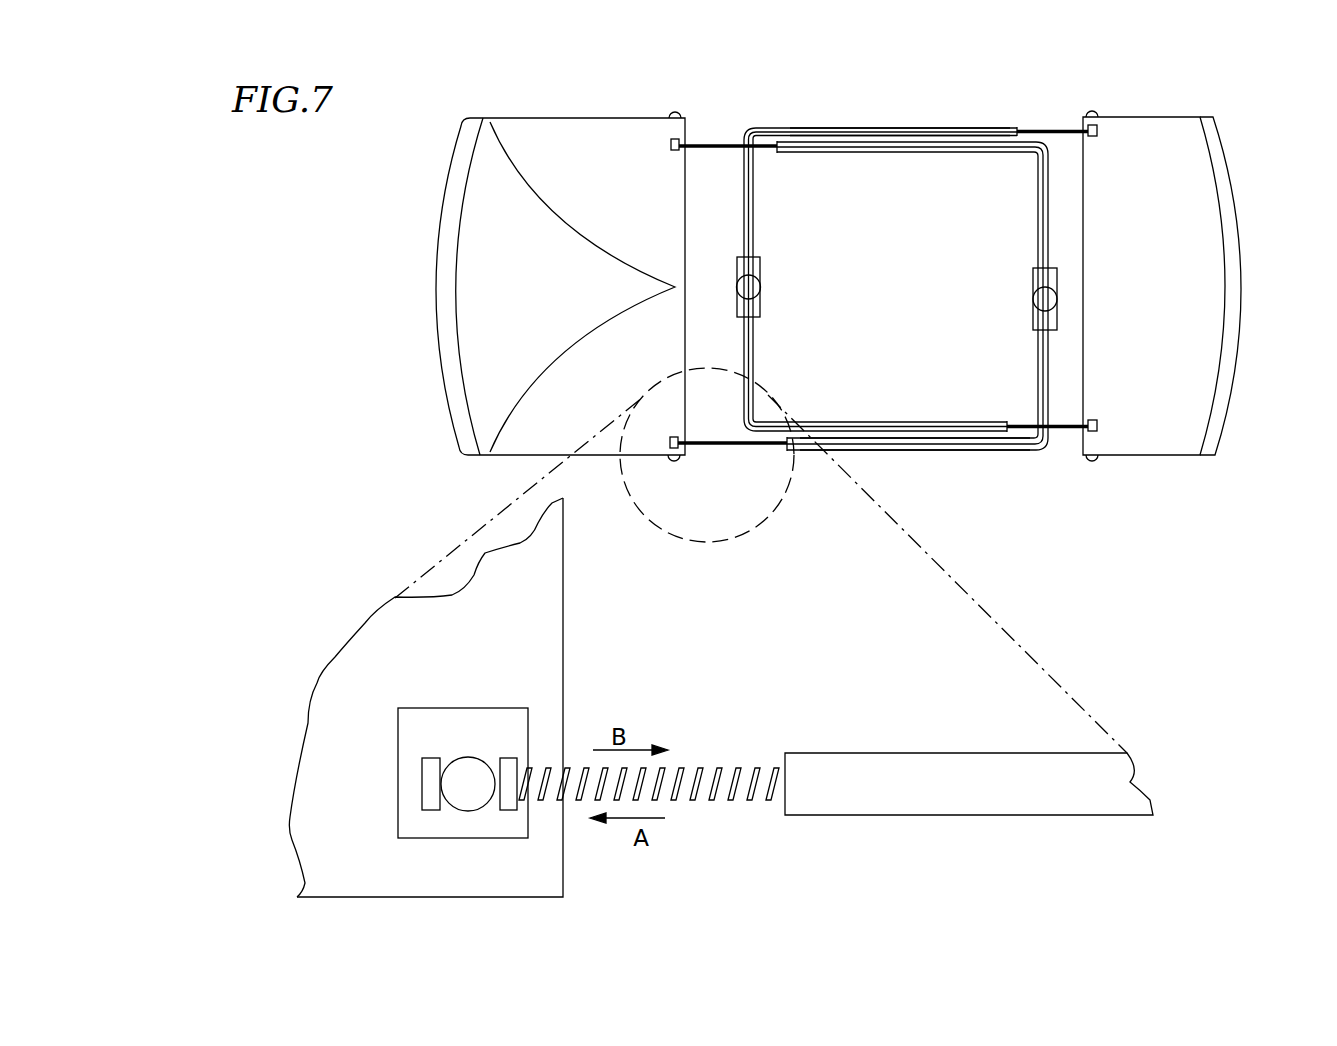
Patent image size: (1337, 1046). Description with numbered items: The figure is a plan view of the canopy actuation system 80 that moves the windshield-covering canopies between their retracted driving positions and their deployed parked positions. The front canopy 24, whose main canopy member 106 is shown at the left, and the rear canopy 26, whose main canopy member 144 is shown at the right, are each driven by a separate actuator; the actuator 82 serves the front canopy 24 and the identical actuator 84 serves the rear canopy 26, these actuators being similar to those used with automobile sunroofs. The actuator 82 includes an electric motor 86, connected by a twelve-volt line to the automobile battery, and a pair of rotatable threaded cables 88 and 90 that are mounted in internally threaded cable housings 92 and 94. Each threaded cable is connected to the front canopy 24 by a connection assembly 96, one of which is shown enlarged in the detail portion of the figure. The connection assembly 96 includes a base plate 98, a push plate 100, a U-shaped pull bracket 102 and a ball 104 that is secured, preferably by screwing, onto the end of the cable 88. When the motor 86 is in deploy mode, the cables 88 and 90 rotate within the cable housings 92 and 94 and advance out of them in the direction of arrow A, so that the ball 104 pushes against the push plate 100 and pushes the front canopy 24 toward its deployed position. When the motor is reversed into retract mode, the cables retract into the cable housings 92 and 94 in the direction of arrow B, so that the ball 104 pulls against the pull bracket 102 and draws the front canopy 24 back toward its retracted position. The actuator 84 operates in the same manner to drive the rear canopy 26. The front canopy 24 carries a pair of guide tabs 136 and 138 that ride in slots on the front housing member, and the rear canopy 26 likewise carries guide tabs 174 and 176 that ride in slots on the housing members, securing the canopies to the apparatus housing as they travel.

The front canopy 24 is at (532, 470).
The rear canopy 26 is at (1209, 287).
The actuation system 80 is at (836, 451).
The actuator 82 is at (1010, 265).
The actuator 84 is at (775, 265).
The electric motor 86 is at (1030, 312).
The threaded cable 88 is at (776, 448).
The threaded cable 90 is at (752, 128).
The cable housing 92 is at (915, 440).
The cable housing 94 is at (920, 152).
The connection assembly 96 is at (537, 633).
The base plate 98 is at (440, 708).
The push plate 100 is at (428, 812).
The U-shaped pull bracket 102 is at (505, 752).
The ball 104 is at (470, 810).
The main canopy member 106 is at (540, 125).
The guide tab 136 is at (676, 461).
The guide tab 138 is at (683, 118).
The main canopy member 144 is at (1185, 180).
The guide tab 174 is at (1092, 459).
The guide tab 176 is at (1092, 113).